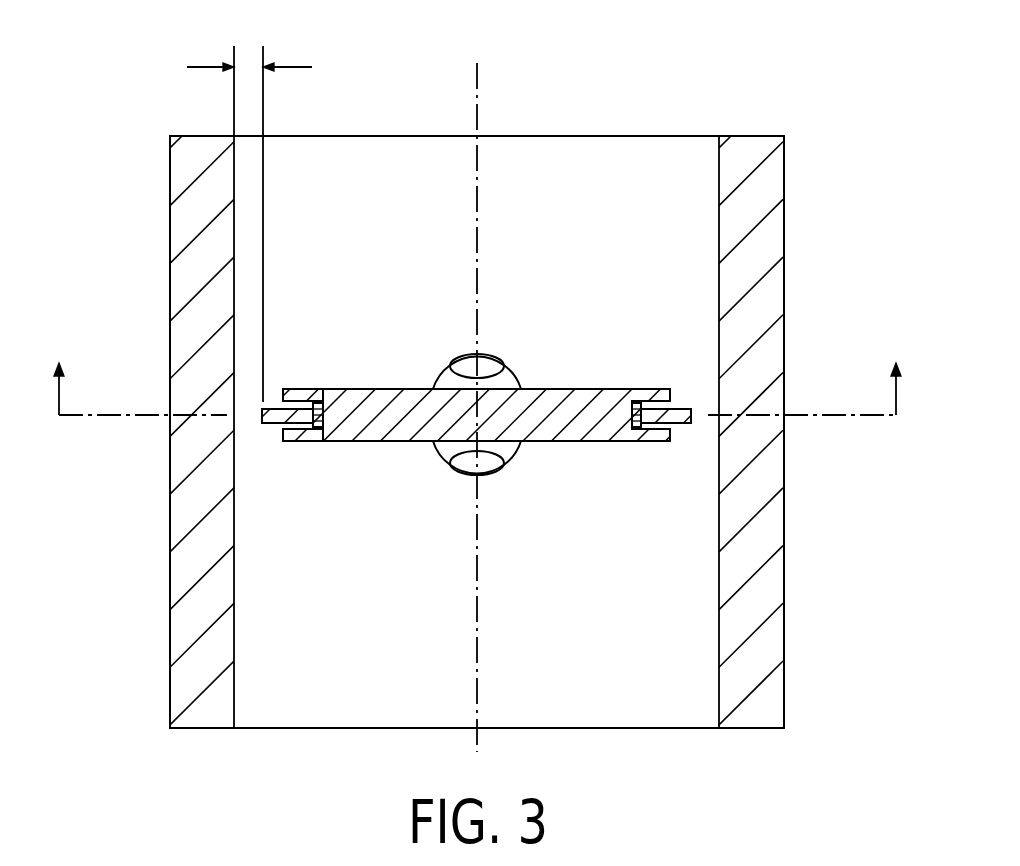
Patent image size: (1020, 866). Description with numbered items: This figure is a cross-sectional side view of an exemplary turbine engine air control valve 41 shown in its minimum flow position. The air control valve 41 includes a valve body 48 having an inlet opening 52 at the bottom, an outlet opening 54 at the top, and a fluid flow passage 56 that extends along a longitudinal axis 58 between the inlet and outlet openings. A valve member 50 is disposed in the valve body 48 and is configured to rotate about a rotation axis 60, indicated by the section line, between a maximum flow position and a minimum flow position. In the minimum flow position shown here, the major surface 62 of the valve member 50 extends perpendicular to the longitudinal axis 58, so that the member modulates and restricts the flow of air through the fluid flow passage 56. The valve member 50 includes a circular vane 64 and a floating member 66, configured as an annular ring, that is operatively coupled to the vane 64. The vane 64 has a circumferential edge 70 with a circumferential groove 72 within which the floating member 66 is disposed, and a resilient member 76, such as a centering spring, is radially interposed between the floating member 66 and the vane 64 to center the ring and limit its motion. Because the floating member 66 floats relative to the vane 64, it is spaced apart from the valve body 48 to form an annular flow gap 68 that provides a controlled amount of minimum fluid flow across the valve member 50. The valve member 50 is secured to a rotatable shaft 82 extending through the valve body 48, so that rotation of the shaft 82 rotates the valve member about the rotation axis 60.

The air control valve 41 is at (108, 81).
The valve body 48 is at (183, 578).
The valve member 50 is at (478, 393).
The inlet opening 52 is at (637, 728).
The outlet opening 54 is at (606, 136).
The fluid flow passage 56 is at (353, 684).
The longitudinal axis 58 is at (477, 88).
The rotation axis 60 is at (818, 418).
The major surface 62 is at (394, 389).
The vane 64 is at (584, 441).
The floating member 66 is at (680, 424).
The annular flow gap 68 is at (250, 405).
The circumferential edge 70 is at (285, 435).
The circumferential groove 72 is at (315, 427).
The resilient member 76 is at (648, 389).
The rotatable shaft 82 is at (487, 358).